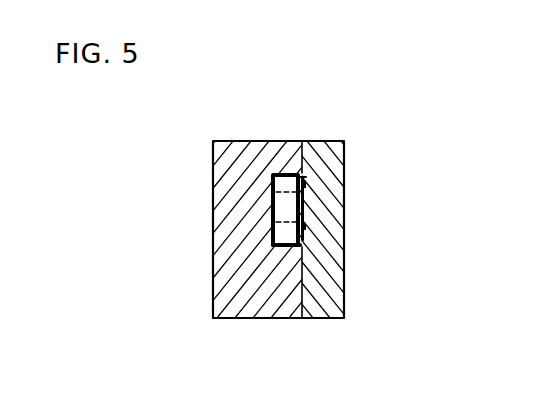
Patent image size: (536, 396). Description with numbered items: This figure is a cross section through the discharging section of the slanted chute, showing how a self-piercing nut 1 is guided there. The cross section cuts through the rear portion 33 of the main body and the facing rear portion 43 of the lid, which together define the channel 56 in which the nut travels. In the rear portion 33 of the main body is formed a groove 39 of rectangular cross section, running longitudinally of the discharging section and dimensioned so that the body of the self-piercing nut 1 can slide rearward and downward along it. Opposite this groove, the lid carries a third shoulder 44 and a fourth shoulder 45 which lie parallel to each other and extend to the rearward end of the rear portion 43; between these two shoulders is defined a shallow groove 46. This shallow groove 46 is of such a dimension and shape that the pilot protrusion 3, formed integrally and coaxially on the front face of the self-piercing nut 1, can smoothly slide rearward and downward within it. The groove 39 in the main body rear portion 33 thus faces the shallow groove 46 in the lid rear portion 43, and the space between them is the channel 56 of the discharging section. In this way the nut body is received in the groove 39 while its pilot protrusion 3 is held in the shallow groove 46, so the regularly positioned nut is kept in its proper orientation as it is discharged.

The self-piercing nut 1 is at (281, 182).
The pilot protrusion 3 is at (312, 191).
The rear portion 33 is at (228, 250).
The groove 39 is at (271, 204).
The rear portion 43 is at (344, 257).
The third shoulder 44 is at (303, 248).
The fourth shoulder 45 is at (306, 163).
The shallow groove 46 is at (306, 196).
The channel 56 is at (281, 248).